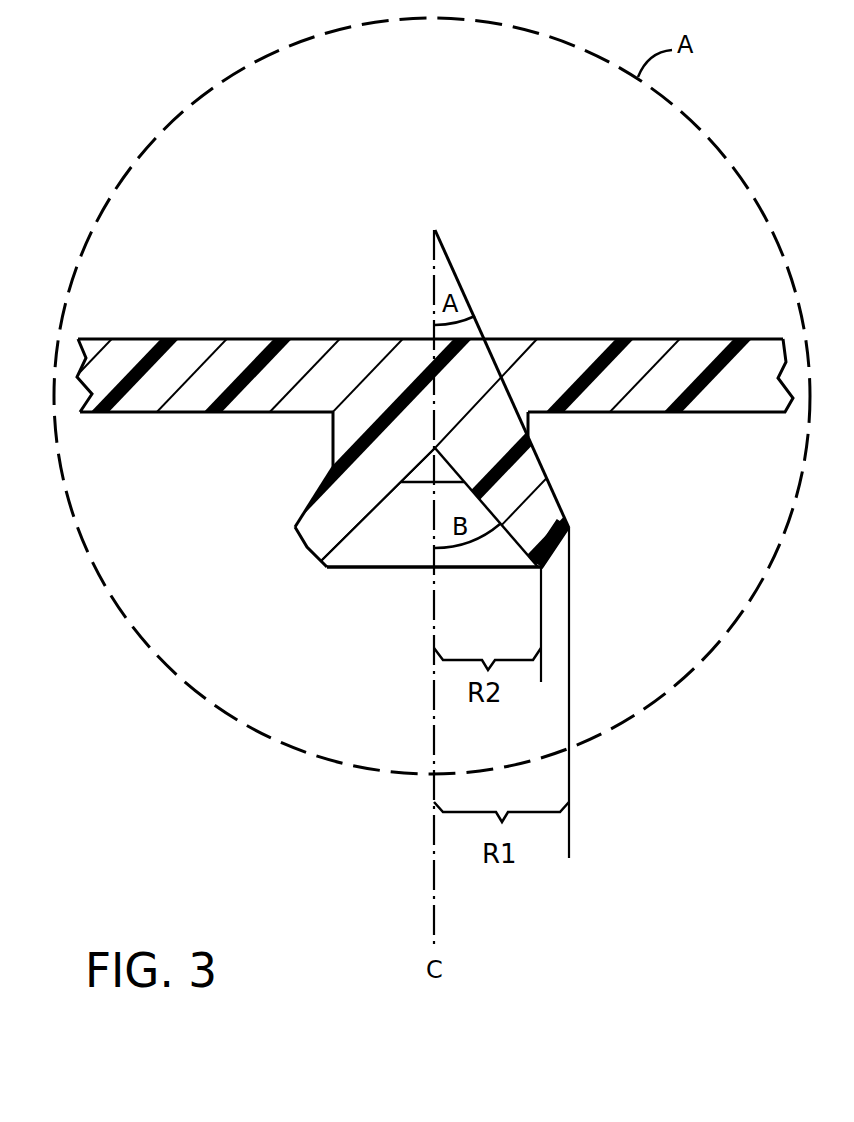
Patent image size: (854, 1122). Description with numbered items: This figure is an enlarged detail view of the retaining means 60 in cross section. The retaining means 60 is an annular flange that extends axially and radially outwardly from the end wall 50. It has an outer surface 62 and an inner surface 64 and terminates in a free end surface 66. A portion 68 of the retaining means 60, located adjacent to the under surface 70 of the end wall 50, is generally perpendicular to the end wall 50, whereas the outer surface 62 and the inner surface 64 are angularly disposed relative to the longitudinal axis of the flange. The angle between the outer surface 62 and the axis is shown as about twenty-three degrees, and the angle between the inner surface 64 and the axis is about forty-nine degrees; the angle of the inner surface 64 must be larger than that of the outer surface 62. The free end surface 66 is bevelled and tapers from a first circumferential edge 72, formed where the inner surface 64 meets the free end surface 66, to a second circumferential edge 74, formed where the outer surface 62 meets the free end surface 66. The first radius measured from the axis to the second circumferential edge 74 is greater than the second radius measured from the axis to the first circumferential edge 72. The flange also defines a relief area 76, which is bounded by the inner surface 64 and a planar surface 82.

The end wall 50 is at (272, 338).
The retaining means 60 is at (370, 453).
The outer surface 62 is at (321, 476).
The inner surface 64 is at (366, 532).
The free end surface 66 is at (308, 549).
The portion 68 is at (533, 425).
The under surface 70 is at (685, 414).
The first circumferential edge 72 is at (546, 569).
The second circumferential edge 74 is at (571, 531).
The relief area 76 is at (477, 568).
The planar surface 82 is at (455, 486).